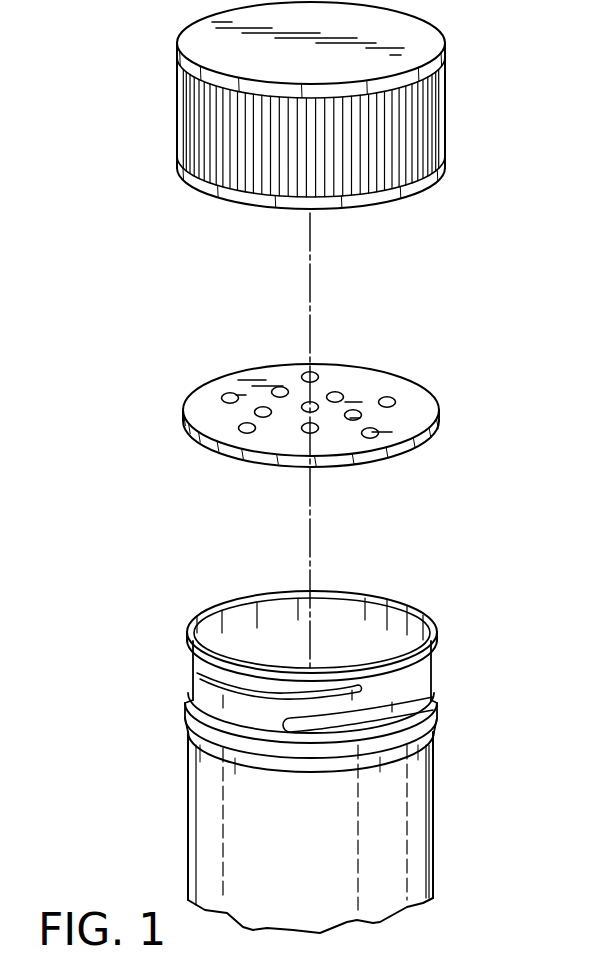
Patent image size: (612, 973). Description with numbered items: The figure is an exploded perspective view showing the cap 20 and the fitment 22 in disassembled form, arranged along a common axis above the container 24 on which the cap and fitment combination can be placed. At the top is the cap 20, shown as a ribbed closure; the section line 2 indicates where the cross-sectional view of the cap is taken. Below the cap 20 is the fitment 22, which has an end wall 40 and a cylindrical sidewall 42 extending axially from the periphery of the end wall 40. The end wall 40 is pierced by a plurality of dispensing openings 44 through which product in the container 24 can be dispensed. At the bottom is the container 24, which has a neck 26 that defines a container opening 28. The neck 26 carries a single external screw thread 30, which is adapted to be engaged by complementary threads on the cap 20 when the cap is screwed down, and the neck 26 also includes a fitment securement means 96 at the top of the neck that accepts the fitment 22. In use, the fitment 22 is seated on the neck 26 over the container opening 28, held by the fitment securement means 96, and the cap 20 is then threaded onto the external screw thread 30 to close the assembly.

The section line 2- 2 is at (165, 93).
The cap 20 is at (445, 135).
The fitment 22 is at (344, 422).
The container 24 is at (318, 744).
The neck 26 is at (412, 805).
The container opening 28 is at (383, 628).
The external screw thread 30 is at (190, 667).
The end wall 40 is at (362, 384).
The cylindrical sidewall 42 is at (273, 463).
The dispensing openings 44 is at (280, 387).
The fitment securement means 96 is at (218, 610).